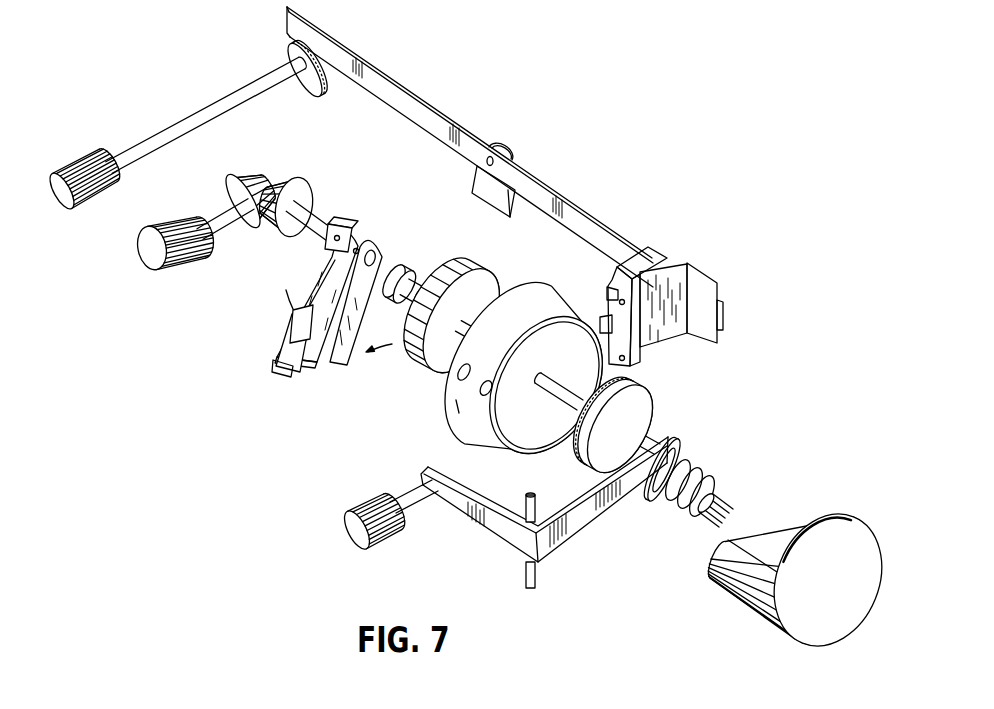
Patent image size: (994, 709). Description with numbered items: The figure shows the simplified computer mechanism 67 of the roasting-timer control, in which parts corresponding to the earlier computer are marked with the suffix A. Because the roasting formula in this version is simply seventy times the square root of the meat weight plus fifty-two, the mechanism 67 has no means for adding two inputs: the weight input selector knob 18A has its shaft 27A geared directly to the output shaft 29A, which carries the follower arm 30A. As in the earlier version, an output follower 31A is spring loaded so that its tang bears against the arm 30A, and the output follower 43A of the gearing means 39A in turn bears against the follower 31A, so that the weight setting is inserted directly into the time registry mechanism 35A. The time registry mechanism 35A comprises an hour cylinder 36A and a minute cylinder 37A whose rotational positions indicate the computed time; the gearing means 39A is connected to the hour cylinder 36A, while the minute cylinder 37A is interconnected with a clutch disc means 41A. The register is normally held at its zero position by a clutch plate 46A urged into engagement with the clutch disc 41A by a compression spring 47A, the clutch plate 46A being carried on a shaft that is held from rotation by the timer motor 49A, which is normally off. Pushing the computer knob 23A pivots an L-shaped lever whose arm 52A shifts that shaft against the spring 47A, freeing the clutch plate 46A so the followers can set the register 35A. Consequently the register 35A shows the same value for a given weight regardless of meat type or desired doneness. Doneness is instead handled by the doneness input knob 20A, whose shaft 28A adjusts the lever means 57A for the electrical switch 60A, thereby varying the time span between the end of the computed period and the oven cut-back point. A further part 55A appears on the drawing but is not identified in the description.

The weight input selector knob 18A is at (150, 258).
The doneness input knob 20A is at (97, 200).
The computer knob 23A is at (388, 528).
The shaft 27A is at (222, 218).
The control shaft 28A is at (203, 112).
The output shaft 29A is at (318, 218).
The follower arm 30A is at (328, 283).
The output follower 31A is at (294, 378).
The time registry mechanism 35A is at (445, 418).
The hour cylinder 36A is at (455, 387).
The minute cylinder 37A is at (485, 433).
The gearing means 39A is at (412, 345).
The clutch disc means 41A is at (573, 443).
The output follower 43A is at (348, 362).
The clutch plate 46A is at (630, 415).
The compression spring 47A is at (707, 476).
The timer motor 49A is at (753, 597).
The arm 52A is at (587, 517).
The disk 55A is at (290, 55).
The lever means 57A is at (432, 118).
The electrical switch 60A is at (653, 267).
The computer mechanism 67 is at (648, 164).